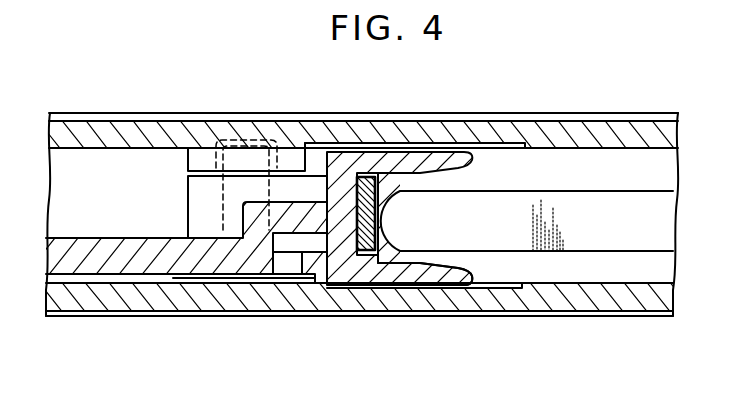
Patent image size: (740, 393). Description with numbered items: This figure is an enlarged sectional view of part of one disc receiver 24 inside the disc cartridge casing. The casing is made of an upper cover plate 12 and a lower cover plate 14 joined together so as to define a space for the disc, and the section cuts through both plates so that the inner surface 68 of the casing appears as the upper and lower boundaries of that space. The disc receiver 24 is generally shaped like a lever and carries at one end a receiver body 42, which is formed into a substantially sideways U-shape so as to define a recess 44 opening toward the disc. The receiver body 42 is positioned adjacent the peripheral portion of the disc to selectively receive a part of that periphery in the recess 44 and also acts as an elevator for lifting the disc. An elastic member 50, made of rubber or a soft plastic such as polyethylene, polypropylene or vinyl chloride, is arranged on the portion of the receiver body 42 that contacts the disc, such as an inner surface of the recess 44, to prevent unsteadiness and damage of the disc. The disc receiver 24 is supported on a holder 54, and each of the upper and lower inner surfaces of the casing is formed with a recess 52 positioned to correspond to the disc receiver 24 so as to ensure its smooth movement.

The upper cover plate 12 is at (198, 128).
The lower cover plate 14 is at (147, 303).
The disc receiver 24 is at (347, 158).
The receiver body 42 is at (392, 273).
The recess 44 is at (433, 208).
The elastic member 50 is at (364, 187).
The recess 52 is at (499, 147).
The holder 54 is at (202, 276).
The inner surface 68 is at (592, 148).